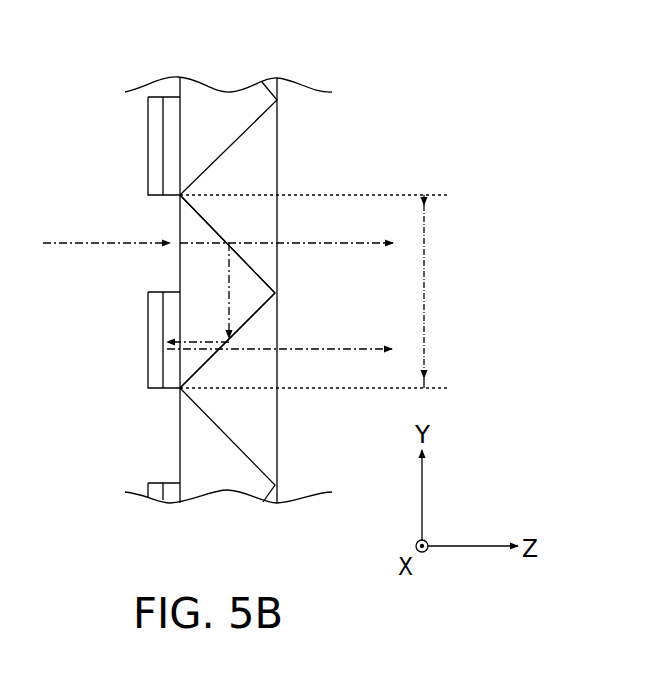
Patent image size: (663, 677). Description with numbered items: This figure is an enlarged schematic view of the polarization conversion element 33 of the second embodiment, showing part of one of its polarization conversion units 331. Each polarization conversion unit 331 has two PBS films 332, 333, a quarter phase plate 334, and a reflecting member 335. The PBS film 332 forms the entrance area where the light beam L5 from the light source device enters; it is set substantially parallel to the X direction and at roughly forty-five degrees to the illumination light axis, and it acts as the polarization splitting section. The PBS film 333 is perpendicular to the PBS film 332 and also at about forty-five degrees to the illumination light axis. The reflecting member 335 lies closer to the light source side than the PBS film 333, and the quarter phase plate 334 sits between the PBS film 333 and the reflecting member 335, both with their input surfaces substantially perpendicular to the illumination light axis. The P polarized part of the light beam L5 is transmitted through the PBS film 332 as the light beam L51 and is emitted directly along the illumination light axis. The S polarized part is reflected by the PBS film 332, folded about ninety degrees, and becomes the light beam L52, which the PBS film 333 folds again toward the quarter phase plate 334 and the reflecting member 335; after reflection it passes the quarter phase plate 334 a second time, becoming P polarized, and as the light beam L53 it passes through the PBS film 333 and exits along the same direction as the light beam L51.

The polarization conversion element 33 is at (388, 140).
The polarization conversion unit 331 is at (326, 291).
The PBS film 332 is at (260, 281).
The PBS film 333 is at (260, 304).
The quarter phase plate 334 is at (173, 313).
The reflecting member 335 is at (153, 363).
The light beam L5 is at (100, 242).
The light beam L51 is at (305, 243).
The light beam L52 is at (222, 275).
The light beam L53 is at (307, 350).